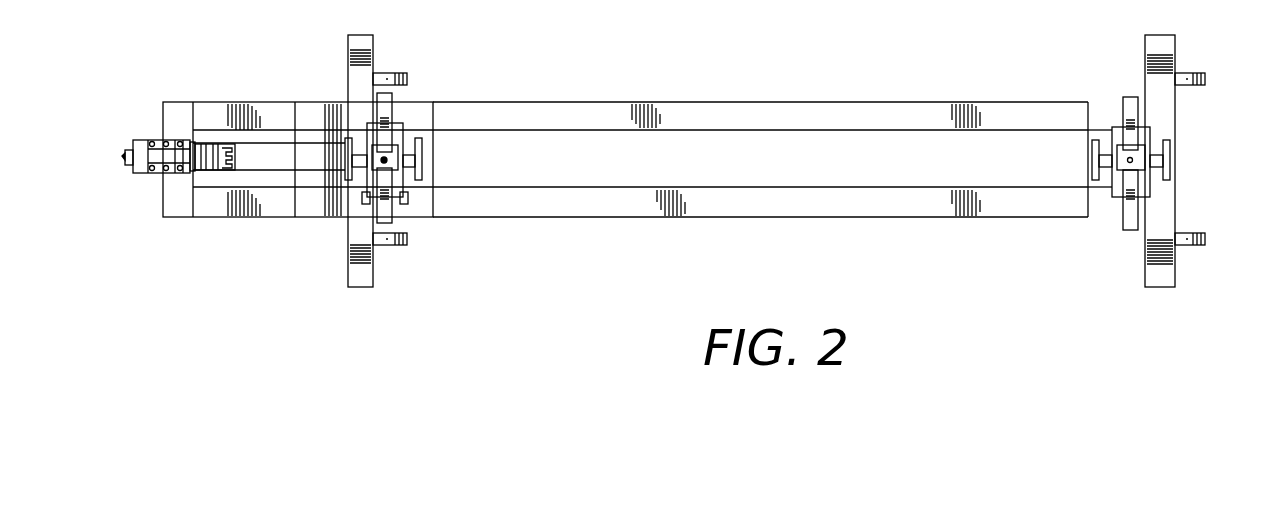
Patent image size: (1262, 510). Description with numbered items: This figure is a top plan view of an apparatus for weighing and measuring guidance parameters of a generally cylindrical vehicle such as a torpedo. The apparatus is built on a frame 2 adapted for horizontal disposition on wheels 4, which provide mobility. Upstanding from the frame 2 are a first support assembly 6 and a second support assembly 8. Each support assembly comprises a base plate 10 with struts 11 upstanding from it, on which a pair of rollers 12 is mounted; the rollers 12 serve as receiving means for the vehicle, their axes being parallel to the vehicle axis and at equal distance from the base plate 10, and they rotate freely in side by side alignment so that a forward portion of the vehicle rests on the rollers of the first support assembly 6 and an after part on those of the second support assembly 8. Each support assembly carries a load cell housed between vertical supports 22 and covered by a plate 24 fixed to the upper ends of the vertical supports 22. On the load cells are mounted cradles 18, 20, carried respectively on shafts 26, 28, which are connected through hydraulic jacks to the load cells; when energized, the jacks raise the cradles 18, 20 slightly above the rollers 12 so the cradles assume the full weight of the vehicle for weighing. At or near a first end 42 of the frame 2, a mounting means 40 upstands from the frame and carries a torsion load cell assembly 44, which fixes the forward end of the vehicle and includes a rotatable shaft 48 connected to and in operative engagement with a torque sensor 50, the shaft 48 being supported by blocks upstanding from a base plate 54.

The frame 2 is at (767, 103).
The wheels 4 is at (395, 73).
The first support assembly 6 is at (296, 40).
The second support assembly 8 is at (1069, 48).
The base plate 10 is at (433, 108).
The struts 11 is at (368, 202).
The rollers 12 is at (391, 108).
The cradle 18 is at (370, 140).
The cradle 20 is at (1146, 152).
The vertical supports 22 is at (346, 152).
The plate 24 is at (360, 167).
The shaft 26 is at (387, 158).
The shaft 28 is at (1133, 163).
The mounting means 40 is at (172, 198).
The first end 42 is at (176, 76).
The torsion load cell assembly 44 is at (153, 138).
The rotatable shaft 48 is at (163, 142).
The torque sensor 50 is at (210, 166).
The base plate 54 is at (162, 175).